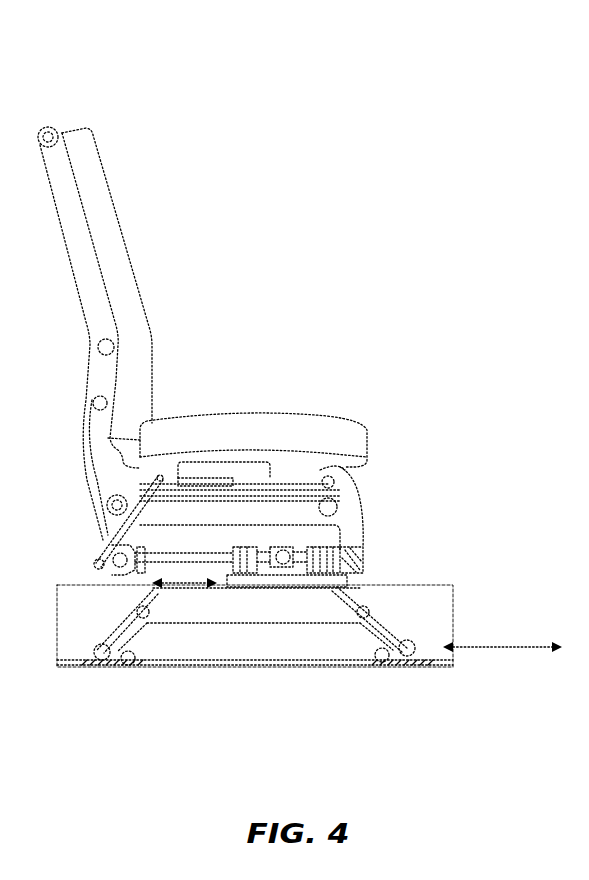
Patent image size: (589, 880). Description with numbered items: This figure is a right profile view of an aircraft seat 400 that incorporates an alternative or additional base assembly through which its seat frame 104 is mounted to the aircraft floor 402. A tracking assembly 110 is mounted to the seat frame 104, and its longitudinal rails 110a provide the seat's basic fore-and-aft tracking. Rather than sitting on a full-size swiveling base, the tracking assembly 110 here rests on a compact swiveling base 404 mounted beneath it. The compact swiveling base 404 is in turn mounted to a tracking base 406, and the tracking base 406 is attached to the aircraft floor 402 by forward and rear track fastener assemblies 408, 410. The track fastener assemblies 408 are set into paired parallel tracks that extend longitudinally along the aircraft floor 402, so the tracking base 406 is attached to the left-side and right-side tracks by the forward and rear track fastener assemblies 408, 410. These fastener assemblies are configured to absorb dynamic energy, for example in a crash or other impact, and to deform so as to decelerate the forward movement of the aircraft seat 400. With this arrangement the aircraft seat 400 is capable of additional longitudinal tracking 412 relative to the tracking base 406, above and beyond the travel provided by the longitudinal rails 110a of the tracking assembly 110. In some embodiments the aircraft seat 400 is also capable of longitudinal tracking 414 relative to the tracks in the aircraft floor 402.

The aircraft seat 400 is at (54, 78).
The seat frame 104 is at (292, 510).
The tracking assembly 110 is at (340, 557).
The longitudinal rails 110a is at (163, 548).
The longitudinal tracking 412 is at (185, 578).
The compact swiveling base 404 is at (323, 582).
The aircraft floor 402 is at (247, 660).
The tracking base 406 is at (260, 605).
The rear track fastener assembly 410 is at (128, 663).
The forward track fastener assembly 408 is at (383, 653).
The longitudinal tracking 414 is at (492, 645).